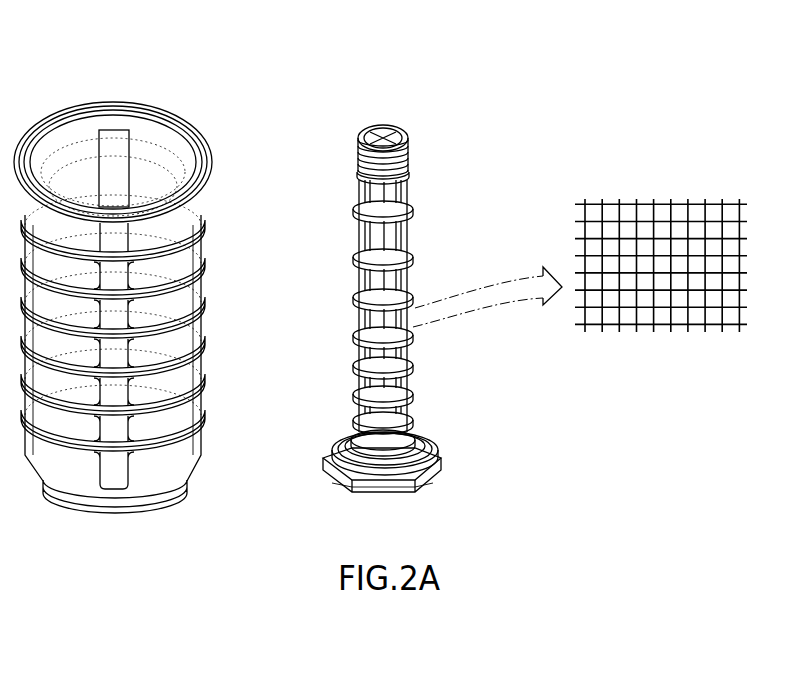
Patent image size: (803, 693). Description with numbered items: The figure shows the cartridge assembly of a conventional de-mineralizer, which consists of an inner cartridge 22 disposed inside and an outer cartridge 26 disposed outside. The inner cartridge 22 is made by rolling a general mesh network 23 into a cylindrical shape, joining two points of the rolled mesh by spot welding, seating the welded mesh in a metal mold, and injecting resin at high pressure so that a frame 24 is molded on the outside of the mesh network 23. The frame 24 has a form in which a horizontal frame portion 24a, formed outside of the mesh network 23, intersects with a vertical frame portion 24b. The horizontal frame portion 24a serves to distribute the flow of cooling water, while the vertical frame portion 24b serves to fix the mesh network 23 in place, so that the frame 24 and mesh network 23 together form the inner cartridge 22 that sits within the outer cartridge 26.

The outer cartridge 26 is at (152, 100).
The inner cartridge 22 is at (403, 118).
The mesh network 23 is at (408, 343).
The frame 24 is at (522, 184).
The horizontal frame portion 24a is at (407, 210).
The vertical frame portion 24b is at (407, 187).